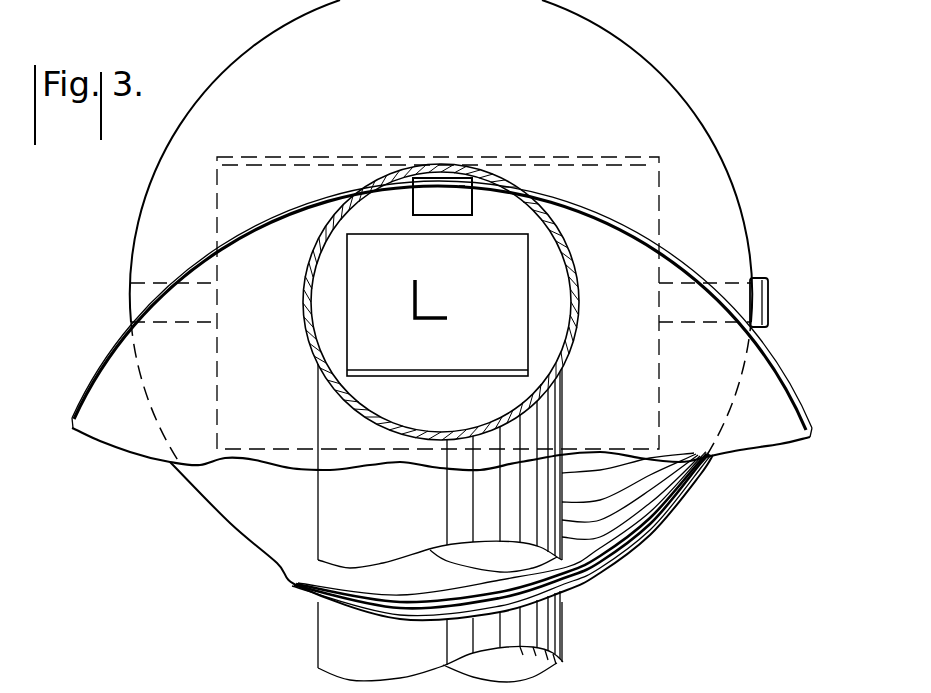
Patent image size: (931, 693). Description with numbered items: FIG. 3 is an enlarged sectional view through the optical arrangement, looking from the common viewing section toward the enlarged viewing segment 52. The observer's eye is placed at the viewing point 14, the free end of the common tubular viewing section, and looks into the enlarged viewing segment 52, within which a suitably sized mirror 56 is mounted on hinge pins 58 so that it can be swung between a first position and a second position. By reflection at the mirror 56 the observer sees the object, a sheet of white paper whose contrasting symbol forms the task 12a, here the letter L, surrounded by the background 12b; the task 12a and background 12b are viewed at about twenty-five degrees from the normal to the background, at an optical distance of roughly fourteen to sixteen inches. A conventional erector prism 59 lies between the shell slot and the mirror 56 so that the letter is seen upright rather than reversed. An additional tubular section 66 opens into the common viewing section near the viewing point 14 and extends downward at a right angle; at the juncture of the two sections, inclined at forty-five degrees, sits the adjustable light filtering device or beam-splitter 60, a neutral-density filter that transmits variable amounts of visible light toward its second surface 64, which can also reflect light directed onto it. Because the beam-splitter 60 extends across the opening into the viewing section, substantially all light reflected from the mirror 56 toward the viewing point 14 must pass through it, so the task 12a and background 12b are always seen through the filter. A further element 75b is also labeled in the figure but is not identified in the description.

The enlarged viewing segment 52 is at (622, 57).
The mirror 56 is at (660, 172).
The hinge pins 58 is at (147, 283).
The erector prism 59 is at (766, 279).
The adjustable light filtering device 60 is at (795, 392).
The second surface 64 is at (105, 393).
The viewing point 14 is at (565, 352).
The task 12a is at (430, 320).
The background 12b is at (514, 269).
The additional tubular section 66 is at (330, 650).
The lower member 75b is at (668, 692).